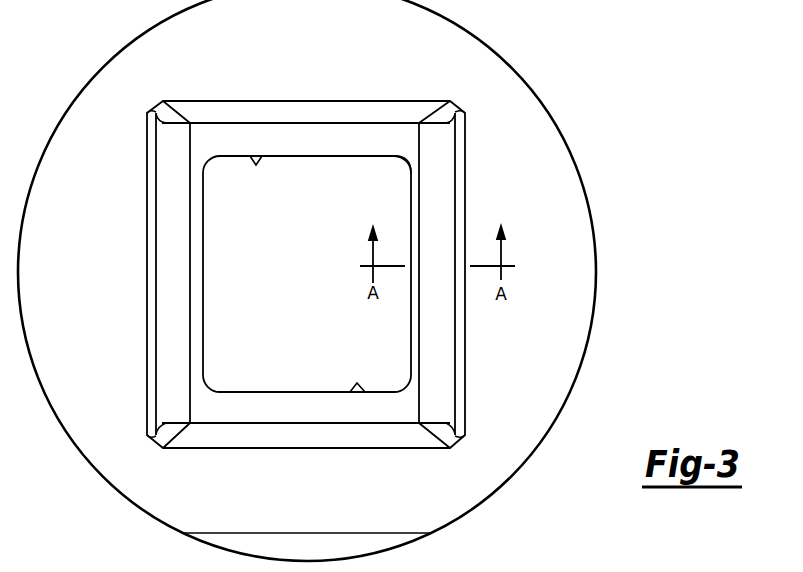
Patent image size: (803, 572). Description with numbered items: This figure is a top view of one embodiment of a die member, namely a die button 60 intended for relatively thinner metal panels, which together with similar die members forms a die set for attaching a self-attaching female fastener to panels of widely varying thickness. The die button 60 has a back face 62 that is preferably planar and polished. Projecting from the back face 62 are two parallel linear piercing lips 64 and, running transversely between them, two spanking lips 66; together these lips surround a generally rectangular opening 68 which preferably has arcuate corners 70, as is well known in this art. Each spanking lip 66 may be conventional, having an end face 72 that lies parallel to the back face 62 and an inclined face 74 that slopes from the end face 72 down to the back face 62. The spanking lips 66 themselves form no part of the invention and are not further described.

The die button 60 is at (594, 91).
The back face 62 is at (557, 216).
The piercing lips 64 is at (132, 275).
The spanking lips 66 is at (350, 92).
The rectangular opening 68 is at (204, 253).
The arcuate corners 70 is at (403, 162).
The end face 72 is at (267, 407).
The inclined face 74 is at (203, 107).